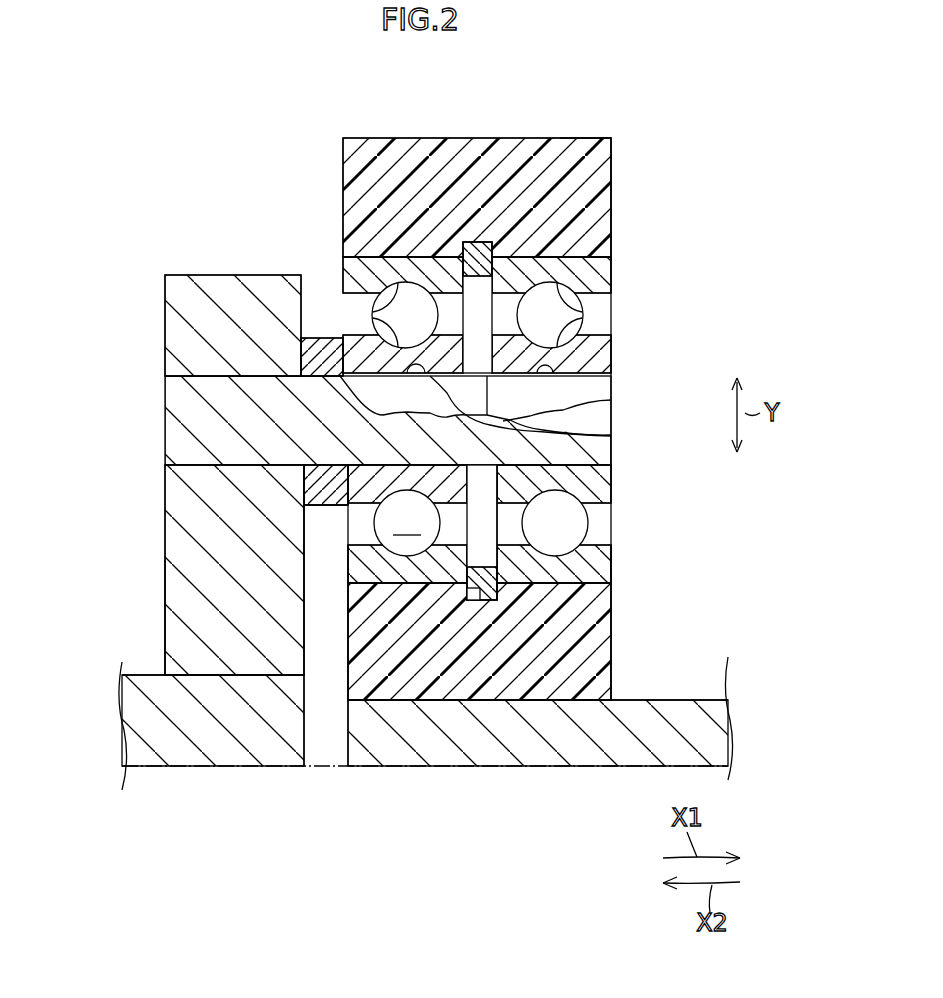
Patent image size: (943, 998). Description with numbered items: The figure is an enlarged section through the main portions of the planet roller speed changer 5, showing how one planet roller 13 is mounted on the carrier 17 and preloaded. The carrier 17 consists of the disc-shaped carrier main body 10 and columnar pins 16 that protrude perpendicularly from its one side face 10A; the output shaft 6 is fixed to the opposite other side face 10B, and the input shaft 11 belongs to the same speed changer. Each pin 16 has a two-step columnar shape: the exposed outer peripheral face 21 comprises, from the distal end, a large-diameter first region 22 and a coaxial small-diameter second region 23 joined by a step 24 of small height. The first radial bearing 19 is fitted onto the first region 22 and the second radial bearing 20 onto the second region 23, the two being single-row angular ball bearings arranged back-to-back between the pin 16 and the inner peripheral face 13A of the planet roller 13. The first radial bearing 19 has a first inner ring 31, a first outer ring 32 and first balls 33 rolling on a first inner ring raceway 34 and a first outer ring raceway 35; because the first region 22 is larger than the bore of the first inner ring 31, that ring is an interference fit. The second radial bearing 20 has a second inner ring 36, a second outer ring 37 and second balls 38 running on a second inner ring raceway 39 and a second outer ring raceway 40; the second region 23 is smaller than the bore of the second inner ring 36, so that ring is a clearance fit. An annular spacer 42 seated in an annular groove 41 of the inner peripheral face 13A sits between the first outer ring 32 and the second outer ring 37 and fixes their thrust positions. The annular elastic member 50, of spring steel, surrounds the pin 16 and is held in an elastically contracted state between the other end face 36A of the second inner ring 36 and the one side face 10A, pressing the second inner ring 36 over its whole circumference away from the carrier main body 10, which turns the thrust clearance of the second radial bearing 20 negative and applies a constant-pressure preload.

The planet roller speed changer 5 is at (596, 126).
The output shaft 6 is at (163, 768).
The carrier main body 10 is at (202, 565).
The one side face 10A is at (310, 620).
The other side face 10B is at (167, 647).
The input shaft 11 is at (668, 707).
The planet roller 13 is at (597, 183).
The inner peripheral face 13A is at (590, 260).
The pin 16 is at (173, 423).
The carrier 17 is at (383, 524).
The first radial bearing 19 is at (612, 355).
The second radial bearing 20 is at (423, 257).
The outer peripheral face 21 is at (525, 412).
The first region 22 is at (560, 376).
The second region 23 is at (667, 373).
The step 24 is at (480, 467).
The first inner ring 31 is at (607, 485).
The first outer ring 32 is at (607, 570).
The first balls 33 is at (577, 522).
The first inner ring raceway 34 is at (582, 330).
The first outer ring raceway 35 is at (580, 295).
The second inner ring 36 is at (368, 490).
The other end face 36A is at (303, 487).
The second outer ring 37 is at (367, 570).
The second balls 38 is at (407, 523).
The second inner ring raceway 39 is at (372, 325).
The second outer ring raceway 40 is at (372, 313).
The annular groove 41 is at (468, 602).
The annular spacer 42 is at (481, 248).
The elastic member 50 is at (332, 514).